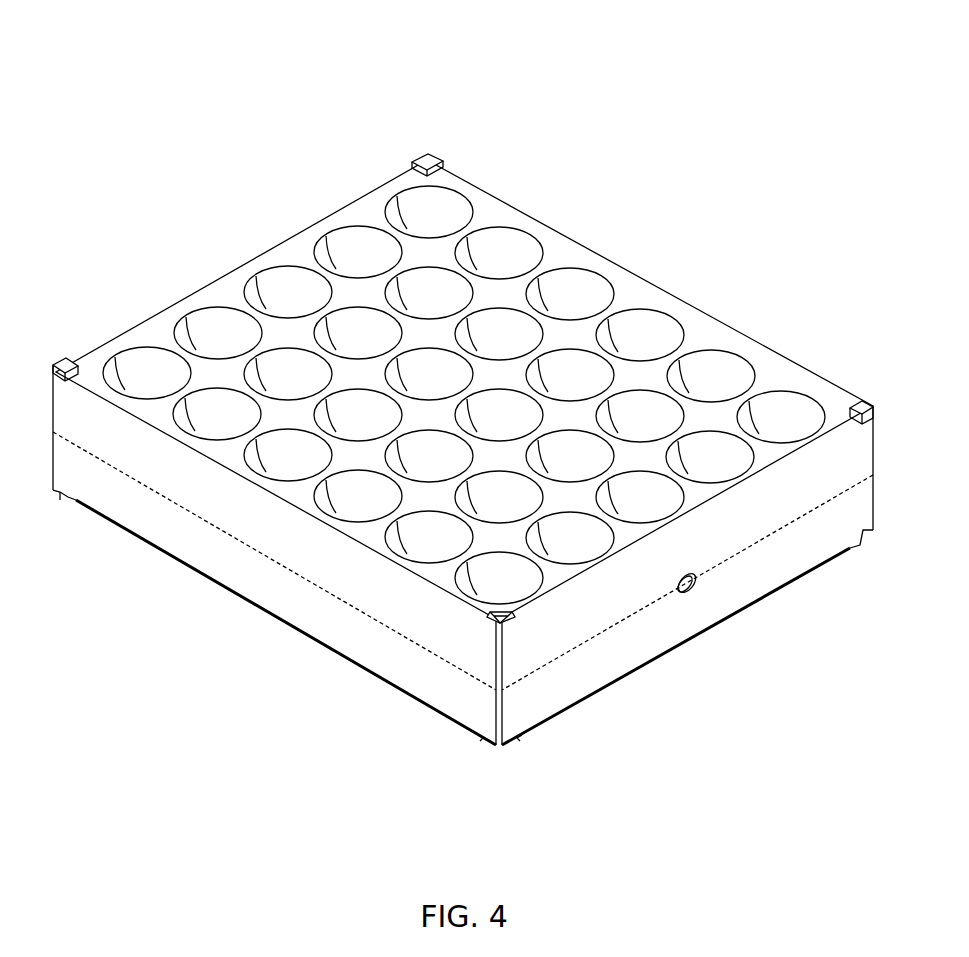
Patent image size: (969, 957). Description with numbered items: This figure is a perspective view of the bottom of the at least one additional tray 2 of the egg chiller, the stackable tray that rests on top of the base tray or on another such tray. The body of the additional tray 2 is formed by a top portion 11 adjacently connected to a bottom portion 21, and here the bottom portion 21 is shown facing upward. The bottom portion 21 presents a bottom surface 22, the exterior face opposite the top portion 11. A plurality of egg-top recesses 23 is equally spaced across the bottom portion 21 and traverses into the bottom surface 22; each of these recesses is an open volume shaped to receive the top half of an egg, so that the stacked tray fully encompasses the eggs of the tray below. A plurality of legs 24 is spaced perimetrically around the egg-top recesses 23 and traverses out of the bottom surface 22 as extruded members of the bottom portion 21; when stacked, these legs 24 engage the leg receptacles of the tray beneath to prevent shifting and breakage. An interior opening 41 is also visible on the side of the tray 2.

The additional tray 2 is at (427, 64).
The top portion 11 is at (238, 589).
The bottom portion 21 is at (253, 539).
The bottom surface 22 is at (632, 292).
The plurality of egg-top recesses 23 is at (279, 304).
The plurality of legs 24 is at (437, 164).
The interior opening 41 is at (708, 591).